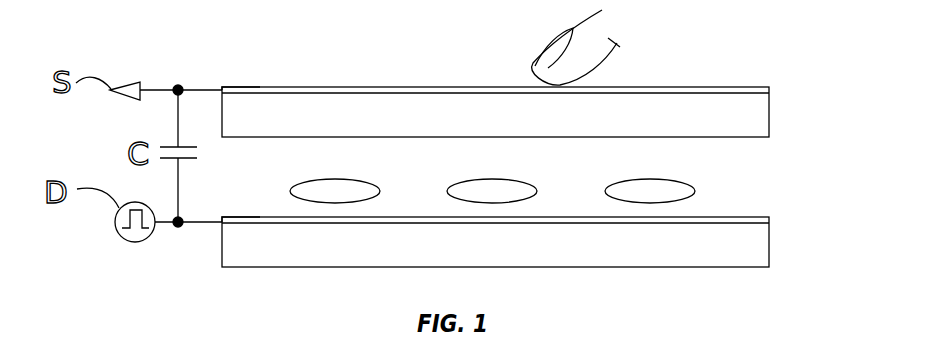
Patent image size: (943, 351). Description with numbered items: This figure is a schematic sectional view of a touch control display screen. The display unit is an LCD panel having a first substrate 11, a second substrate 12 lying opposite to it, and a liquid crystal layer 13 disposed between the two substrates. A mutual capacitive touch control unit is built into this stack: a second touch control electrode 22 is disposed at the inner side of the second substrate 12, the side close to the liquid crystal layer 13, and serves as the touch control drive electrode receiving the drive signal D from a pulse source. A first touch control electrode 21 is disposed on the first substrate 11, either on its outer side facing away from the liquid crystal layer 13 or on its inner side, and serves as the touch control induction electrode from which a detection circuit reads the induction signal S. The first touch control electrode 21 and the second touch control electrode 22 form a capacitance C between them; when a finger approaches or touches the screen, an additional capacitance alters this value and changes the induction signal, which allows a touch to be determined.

The first substrate 11 is at (745, 115).
The second substrate 12 is at (753, 245).
The liquid crystal layer 13 is at (688, 183).
The first touch control electrode 21 is at (249, 87).
The second touch control electrode 22 is at (225, 217).